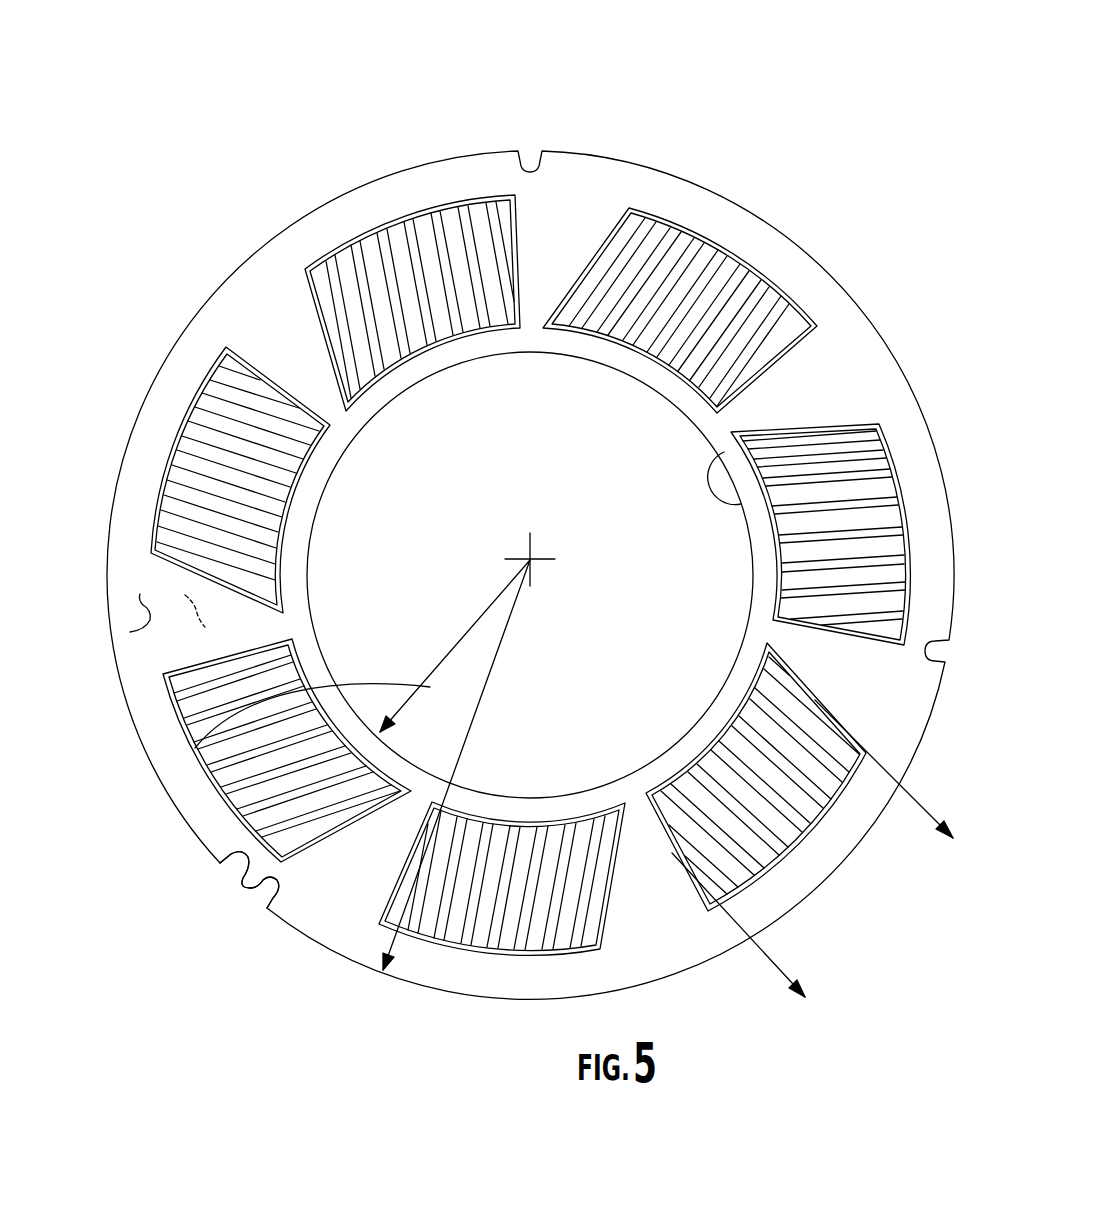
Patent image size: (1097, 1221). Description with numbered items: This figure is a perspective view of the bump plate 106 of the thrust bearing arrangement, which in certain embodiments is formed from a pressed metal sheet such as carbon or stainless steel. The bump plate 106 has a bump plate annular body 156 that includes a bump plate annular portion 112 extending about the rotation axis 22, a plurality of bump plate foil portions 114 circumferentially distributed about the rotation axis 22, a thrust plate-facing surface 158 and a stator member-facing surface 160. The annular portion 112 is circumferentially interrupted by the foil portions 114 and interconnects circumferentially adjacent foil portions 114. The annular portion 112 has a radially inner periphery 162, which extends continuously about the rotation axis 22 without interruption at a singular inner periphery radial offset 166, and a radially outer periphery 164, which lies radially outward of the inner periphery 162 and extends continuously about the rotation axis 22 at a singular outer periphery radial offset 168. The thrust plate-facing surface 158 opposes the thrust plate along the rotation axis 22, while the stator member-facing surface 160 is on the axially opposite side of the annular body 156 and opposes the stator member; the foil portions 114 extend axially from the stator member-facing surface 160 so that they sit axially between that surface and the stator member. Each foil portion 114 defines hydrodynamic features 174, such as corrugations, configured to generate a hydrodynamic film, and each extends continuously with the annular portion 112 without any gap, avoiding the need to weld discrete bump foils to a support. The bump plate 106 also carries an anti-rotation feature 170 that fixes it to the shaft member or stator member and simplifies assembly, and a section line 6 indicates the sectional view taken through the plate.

The bump plate annular body 156 is at (691, 143).
The bump plate 106 is at (233, 1066).
The rotation axis 22 is at (532, 552).
The section line 6- 6 is at (812, 848).
The singular outer periphery radial offset 168 is at (467, 753).
The singular inner periphery radial offset 166 is at (288, 646).
The hydrodynamic features 174 is at (222, 444).
The bump plate foil portions 114 is at (392, 216).
The bump plate annular portion 112 is at (757, 241).
The radially outer periphery 164 is at (938, 455).
The radially inner periphery 162 is at (738, 504).
The thrust plate-facing surface 158 is at (130, 632).
The stator member-facing surface 160 is at (193, 613).
The anti-rotation feature 170 is at (238, 905).